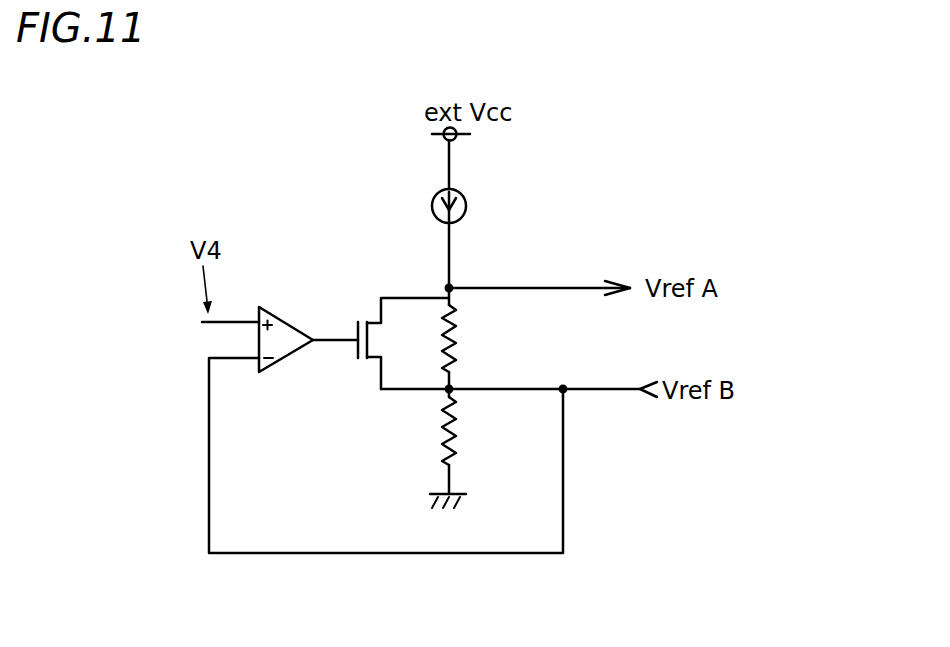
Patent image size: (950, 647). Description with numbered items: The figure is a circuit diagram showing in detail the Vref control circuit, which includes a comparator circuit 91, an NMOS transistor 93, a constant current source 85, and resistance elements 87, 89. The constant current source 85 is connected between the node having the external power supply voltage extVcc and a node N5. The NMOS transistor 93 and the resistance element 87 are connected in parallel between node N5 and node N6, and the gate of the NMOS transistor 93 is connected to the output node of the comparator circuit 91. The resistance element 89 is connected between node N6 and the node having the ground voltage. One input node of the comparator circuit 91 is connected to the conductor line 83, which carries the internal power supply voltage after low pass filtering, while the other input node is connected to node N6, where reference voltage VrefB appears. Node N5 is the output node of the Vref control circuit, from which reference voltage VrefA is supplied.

The conductor line 83 is at (230, 321).
The constant current source 85 is at (468, 206).
The resistance element 87 is at (462, 330).
The resistance element 89 is at (465, 446).
The comparator circuit 91 is at (277, 362).
The NMOS transistor 93 is at (362, 364).
The node N5 is at (455, 286).
The node N6 is at (443, 392).